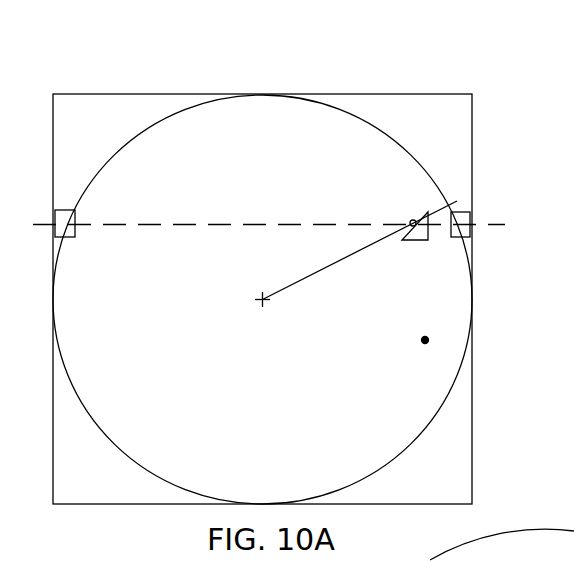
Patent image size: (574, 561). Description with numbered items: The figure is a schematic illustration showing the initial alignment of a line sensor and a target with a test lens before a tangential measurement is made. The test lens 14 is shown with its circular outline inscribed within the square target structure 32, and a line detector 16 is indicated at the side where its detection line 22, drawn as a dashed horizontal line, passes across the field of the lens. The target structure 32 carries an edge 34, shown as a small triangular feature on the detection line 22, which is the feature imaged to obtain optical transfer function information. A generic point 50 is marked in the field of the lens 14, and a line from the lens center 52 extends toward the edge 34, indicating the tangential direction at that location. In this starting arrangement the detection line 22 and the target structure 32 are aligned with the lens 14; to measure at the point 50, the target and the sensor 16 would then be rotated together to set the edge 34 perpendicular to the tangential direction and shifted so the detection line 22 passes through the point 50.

The target structure 32 is at (97, 92).
The test lens 14 is at (392, 130).
The line detector 16 is at (68, 208).
The detection line 22 is at (122, 228).
The edge 34 is at (415, 216).
The center point 52 is at (264, 303).
The generic point 50 is at (421, 347).